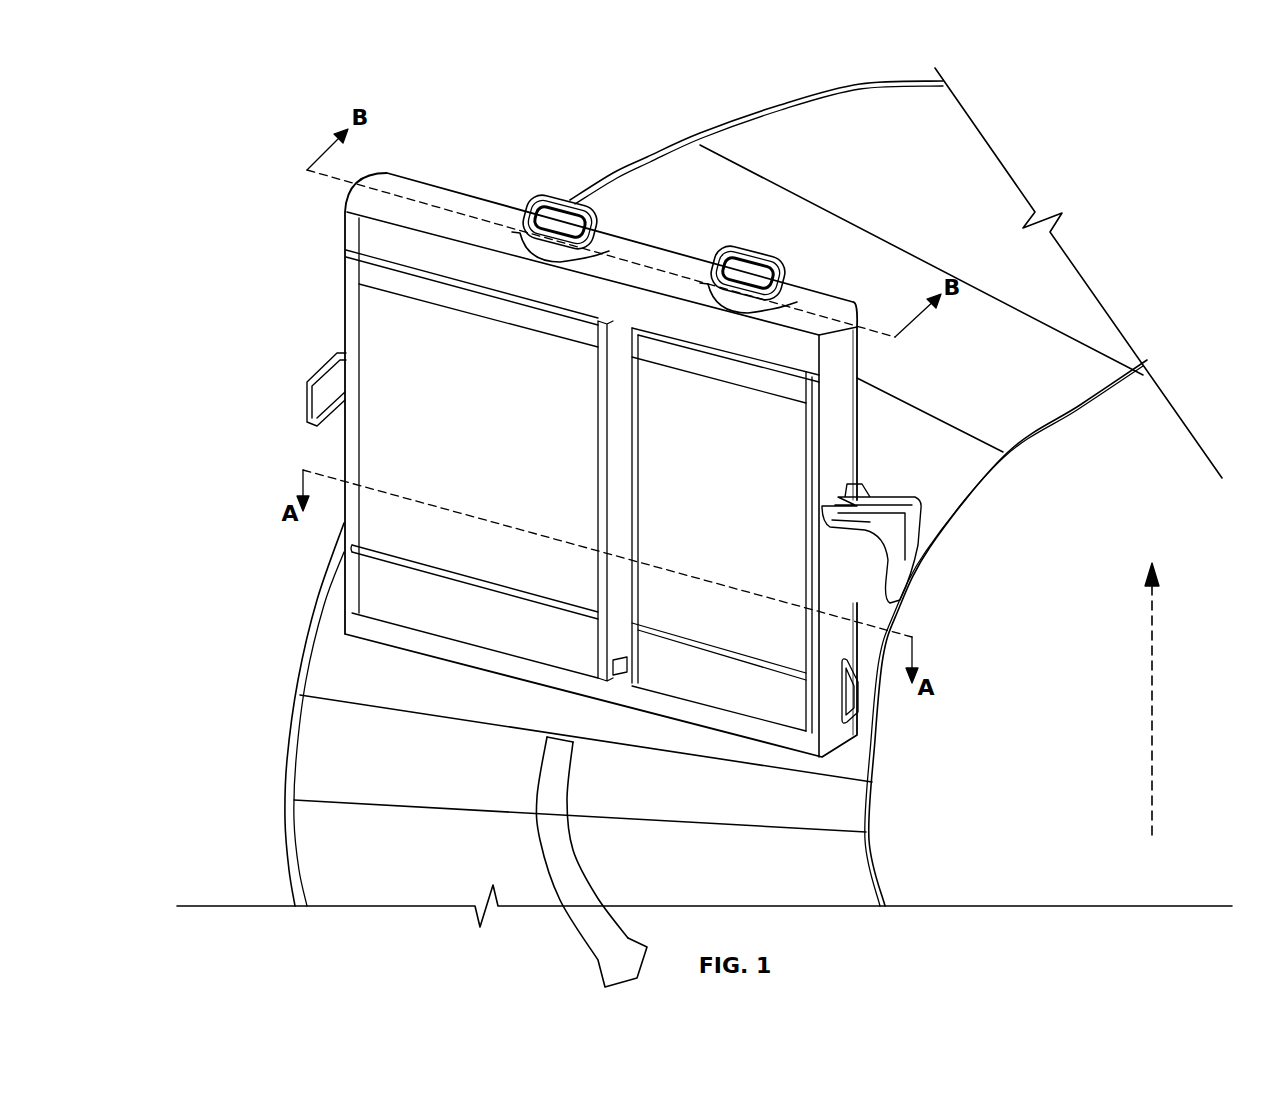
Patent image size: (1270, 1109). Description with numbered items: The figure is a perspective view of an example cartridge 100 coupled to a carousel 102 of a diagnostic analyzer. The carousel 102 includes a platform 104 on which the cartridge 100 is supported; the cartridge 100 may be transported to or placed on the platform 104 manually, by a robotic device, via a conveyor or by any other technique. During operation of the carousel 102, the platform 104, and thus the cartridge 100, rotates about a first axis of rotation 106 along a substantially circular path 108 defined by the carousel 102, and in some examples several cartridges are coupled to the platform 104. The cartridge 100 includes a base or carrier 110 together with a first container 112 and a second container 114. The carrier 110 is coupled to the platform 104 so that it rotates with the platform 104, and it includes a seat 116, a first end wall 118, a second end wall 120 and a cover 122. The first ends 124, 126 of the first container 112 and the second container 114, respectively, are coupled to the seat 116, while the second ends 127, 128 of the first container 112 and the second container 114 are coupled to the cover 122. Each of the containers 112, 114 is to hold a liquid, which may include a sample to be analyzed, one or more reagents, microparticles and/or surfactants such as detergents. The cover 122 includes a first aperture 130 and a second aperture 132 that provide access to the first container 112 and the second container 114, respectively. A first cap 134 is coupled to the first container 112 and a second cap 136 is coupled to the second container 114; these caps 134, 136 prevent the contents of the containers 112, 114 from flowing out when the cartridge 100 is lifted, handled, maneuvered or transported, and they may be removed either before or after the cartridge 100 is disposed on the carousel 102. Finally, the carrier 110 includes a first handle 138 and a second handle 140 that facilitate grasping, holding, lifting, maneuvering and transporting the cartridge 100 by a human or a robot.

The cartridge 100 is at (876, 262).
The carousel 102 is at (877, 877).
The platform 104 is at (583, 788).
The first axis of rotation 106 is at (1152, 705).
The substantially circular path 108 is at (580, 935).
The carrier 110 is at (855, 422).
The first container 112 is at (383, 413).
The second container 114 is at (757, 507).
The seat 116 is at (353, 621).
The first end wall 118 is at (342, 300).
The second end wall 120 is at (848, 372).
The cover 122 is at (413, 198).
The first end of the first container 124 is at (450, 638).
The first end of the second container 126 is at (692, 703).
The second end of the first container 127 is at (478, 288).
The second end of the second container 128 is at (720, 352).
The first aperture 130 is at (602, 246).
The second aperture 132 is at (790, 298).
The first cap 134 is at (560, 208).
The second cap 136 is at (745, 258).
The first handle 138 is at (307, 400).
The second handle 140 is at (927, 570).